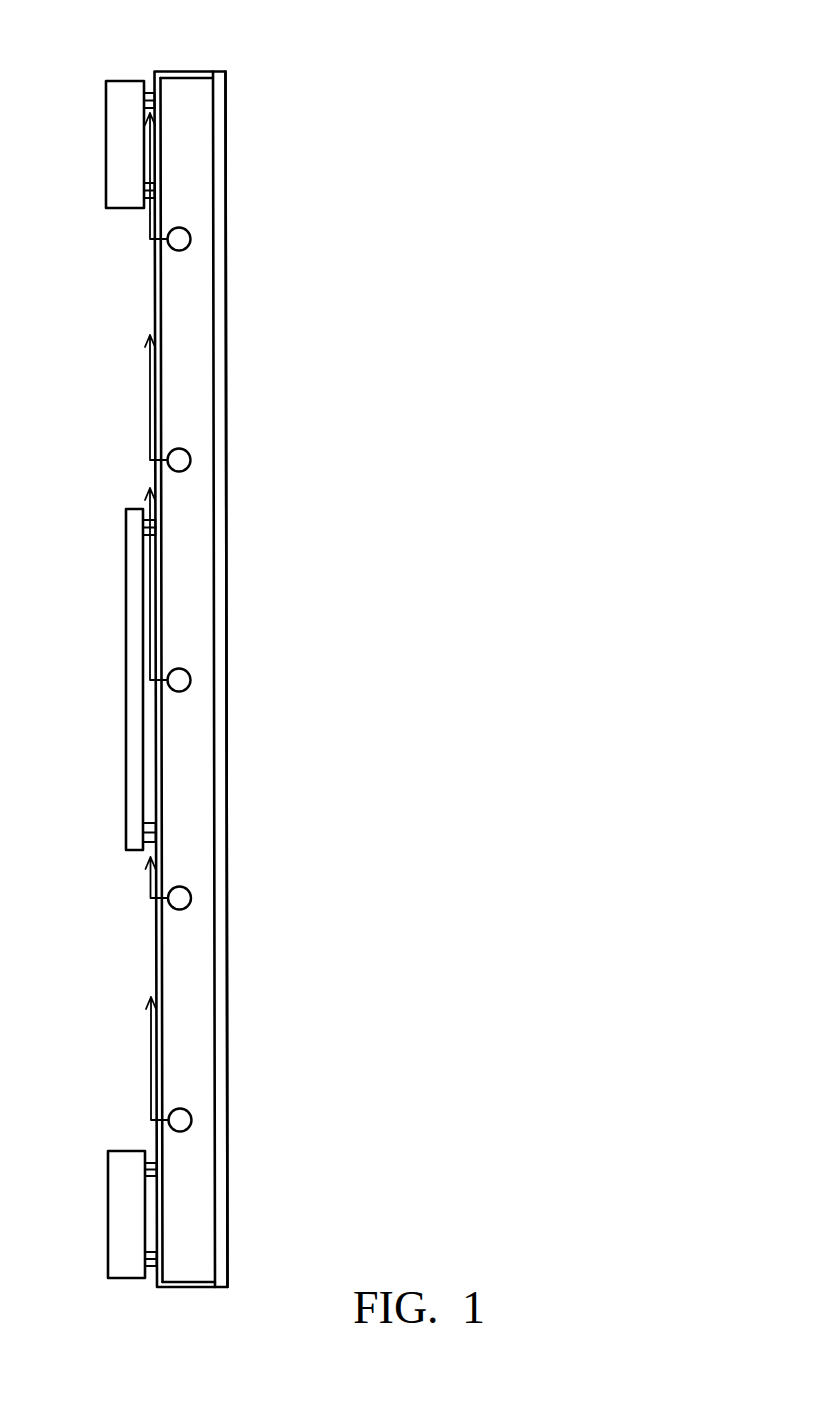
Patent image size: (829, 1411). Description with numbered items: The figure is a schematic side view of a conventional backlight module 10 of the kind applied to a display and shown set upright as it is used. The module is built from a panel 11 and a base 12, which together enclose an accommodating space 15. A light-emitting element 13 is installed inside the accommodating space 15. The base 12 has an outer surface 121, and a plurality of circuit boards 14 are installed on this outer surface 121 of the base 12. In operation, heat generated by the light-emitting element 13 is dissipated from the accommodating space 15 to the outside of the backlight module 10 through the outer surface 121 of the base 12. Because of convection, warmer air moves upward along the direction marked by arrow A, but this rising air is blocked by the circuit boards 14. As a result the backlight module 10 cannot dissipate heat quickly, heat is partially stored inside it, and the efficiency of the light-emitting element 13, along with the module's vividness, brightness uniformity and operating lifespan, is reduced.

The backlight module 10 is at (433, 84).
The panel 11 is at (220, 346).
The base 12 is at (190, 76).
The outer surface 121 is at (157, 302).
The light-emitting element 13 is at (191, 239).
The circuit boards 14 is at (115, 141).
The accommodating space 15 is at (193, 565).